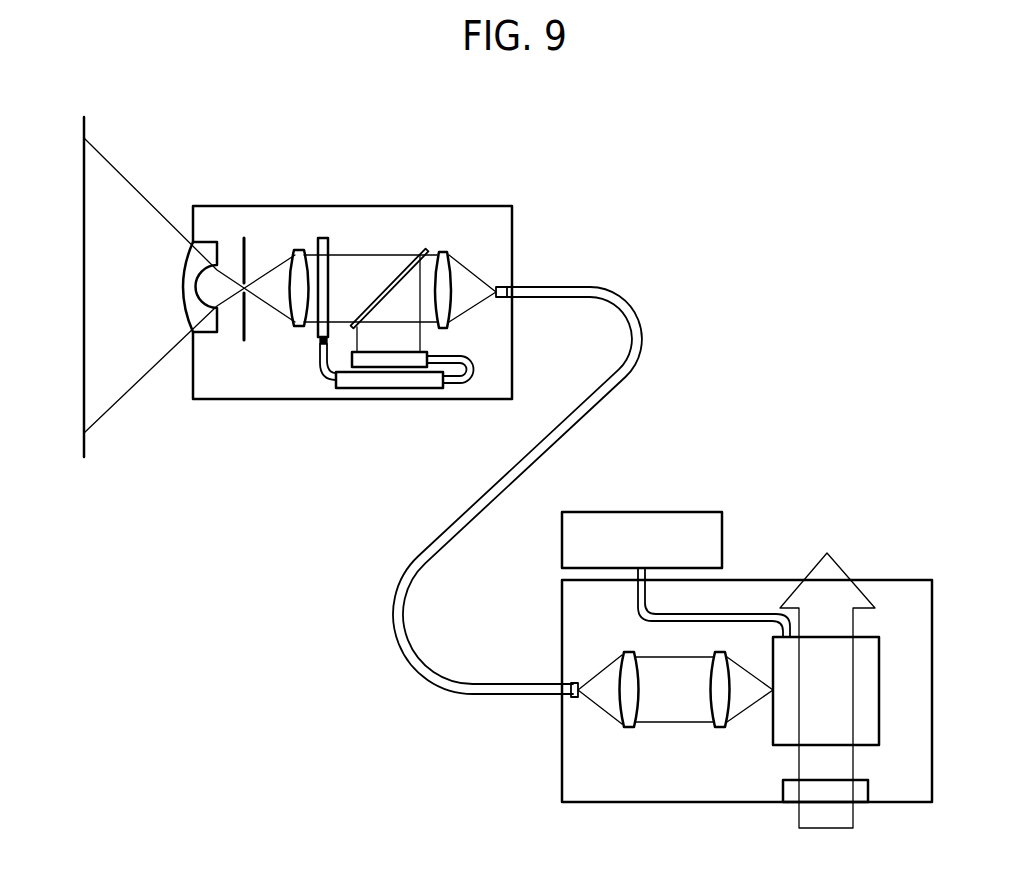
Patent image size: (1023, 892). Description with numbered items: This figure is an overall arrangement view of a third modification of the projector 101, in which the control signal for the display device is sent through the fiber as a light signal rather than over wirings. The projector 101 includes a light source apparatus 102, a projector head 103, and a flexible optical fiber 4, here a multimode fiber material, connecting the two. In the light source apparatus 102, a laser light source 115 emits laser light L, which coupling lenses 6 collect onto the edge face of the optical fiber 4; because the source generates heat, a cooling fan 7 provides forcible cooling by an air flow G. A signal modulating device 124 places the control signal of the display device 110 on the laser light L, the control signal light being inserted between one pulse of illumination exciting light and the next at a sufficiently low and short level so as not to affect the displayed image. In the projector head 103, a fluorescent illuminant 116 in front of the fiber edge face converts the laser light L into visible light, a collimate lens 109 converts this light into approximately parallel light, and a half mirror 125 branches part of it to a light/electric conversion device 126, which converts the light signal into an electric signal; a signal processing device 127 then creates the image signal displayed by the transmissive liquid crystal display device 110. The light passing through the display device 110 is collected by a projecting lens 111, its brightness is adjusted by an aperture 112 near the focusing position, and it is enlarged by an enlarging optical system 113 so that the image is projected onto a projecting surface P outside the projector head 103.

The projector 101 is at (730, 127).
The light source apparatus 102 is at (763, 580).
The projector head 103 is at (468, 206).
The optical fiber 4 is at (642, 338).
The coupling lenses 6 is at (718, 765).
The cooling fan 7 is at (868, 788).
The collimate lens 109 is at (441, 252).
The transmissive liquid crystal display device 110 is at (323, 238).
The projecting lens 111 is at (297, 327).
The aperture 112 is at (233, 255).
The enlarging optical system 113 is at (210, 242).
The laser light source 115 is at (879, 700).
The fluorescent illuminant 116 is at (500, 284).
The signal modulating device 124 is at (680, 512).
The half mirror 125 is at (380, 283).
The light/electric conversion device 126 is at (428, 352).
The signal processing device 127 is at (417, 383).
The projecting surface P is at (84, 445).
The laser light L is at (677, 724).
The air flow G is at (855, 620).